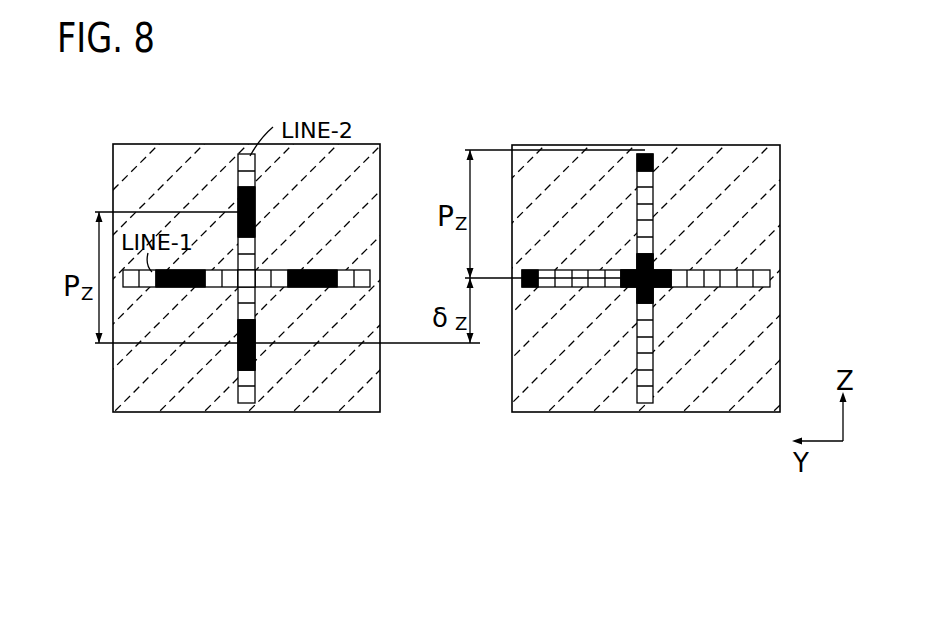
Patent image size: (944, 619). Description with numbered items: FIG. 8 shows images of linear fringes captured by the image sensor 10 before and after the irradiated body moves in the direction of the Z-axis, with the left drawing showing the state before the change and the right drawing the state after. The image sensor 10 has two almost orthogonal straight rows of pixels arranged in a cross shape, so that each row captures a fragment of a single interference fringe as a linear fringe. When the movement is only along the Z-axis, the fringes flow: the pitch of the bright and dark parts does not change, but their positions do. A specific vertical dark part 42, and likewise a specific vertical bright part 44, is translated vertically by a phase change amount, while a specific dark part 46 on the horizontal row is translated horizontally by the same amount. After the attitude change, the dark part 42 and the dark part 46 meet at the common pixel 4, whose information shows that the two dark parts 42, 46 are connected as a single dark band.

The image sensor 10 is at (171, 144).
The common pixel 4 is at (246, 279).
The vertical dark part 42 is at (258, 349).
The vertical bright part 44 is at (248, 290).
The dark part 46 is at (322, 268).